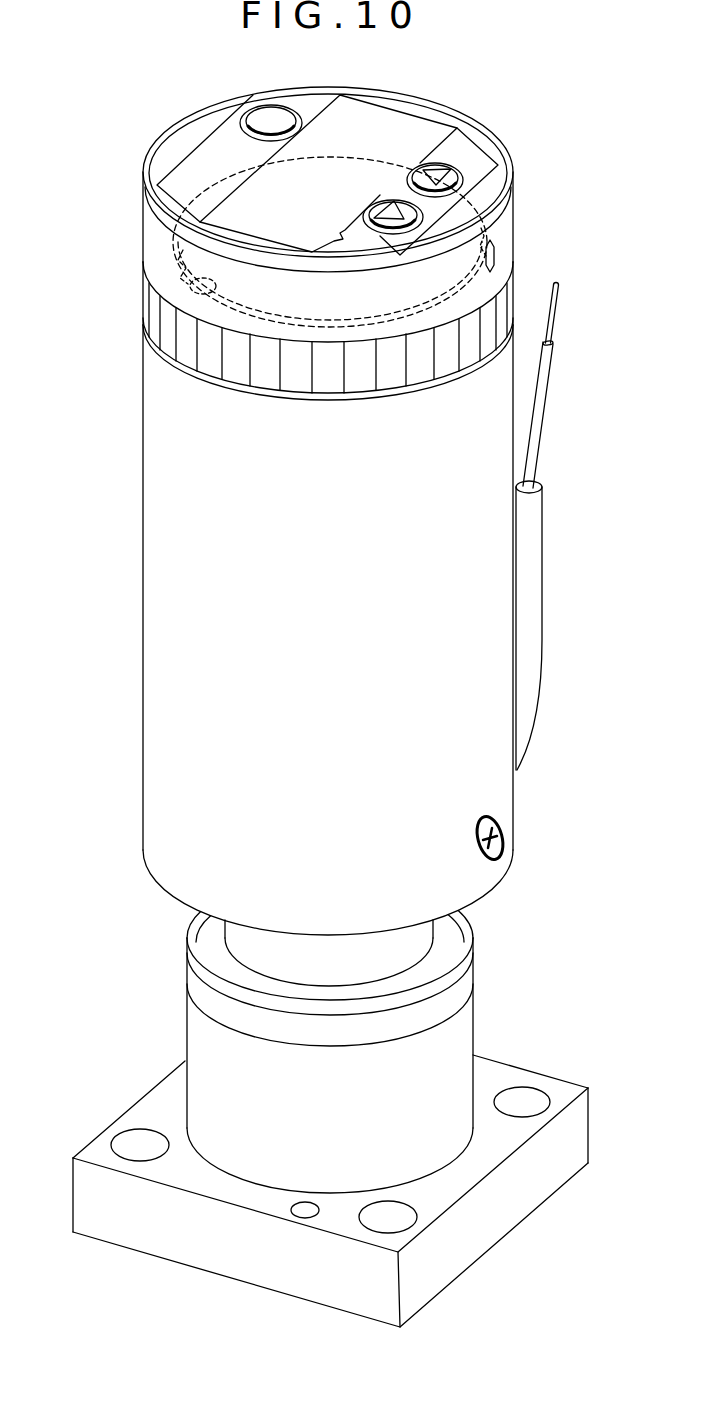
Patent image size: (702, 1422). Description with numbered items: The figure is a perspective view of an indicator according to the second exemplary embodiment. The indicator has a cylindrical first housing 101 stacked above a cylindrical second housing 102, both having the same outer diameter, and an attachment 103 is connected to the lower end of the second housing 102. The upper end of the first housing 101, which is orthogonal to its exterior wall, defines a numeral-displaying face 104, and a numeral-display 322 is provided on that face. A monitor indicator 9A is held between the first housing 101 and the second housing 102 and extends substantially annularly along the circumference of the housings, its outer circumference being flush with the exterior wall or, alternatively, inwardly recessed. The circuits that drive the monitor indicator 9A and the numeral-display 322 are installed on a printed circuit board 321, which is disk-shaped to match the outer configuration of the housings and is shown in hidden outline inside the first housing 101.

The monitor indicator 9A is at (331, 378).
The first housing 101 is at (512, 287).
The second housing 102 is at (487, 630).
The attachment 103 is at (455, 1028).
The numeral-displaying face 104 is at (475, 148).
The printed circuit board 321 is at (158, 292).
The numeral-display 322 is at (392, 118).